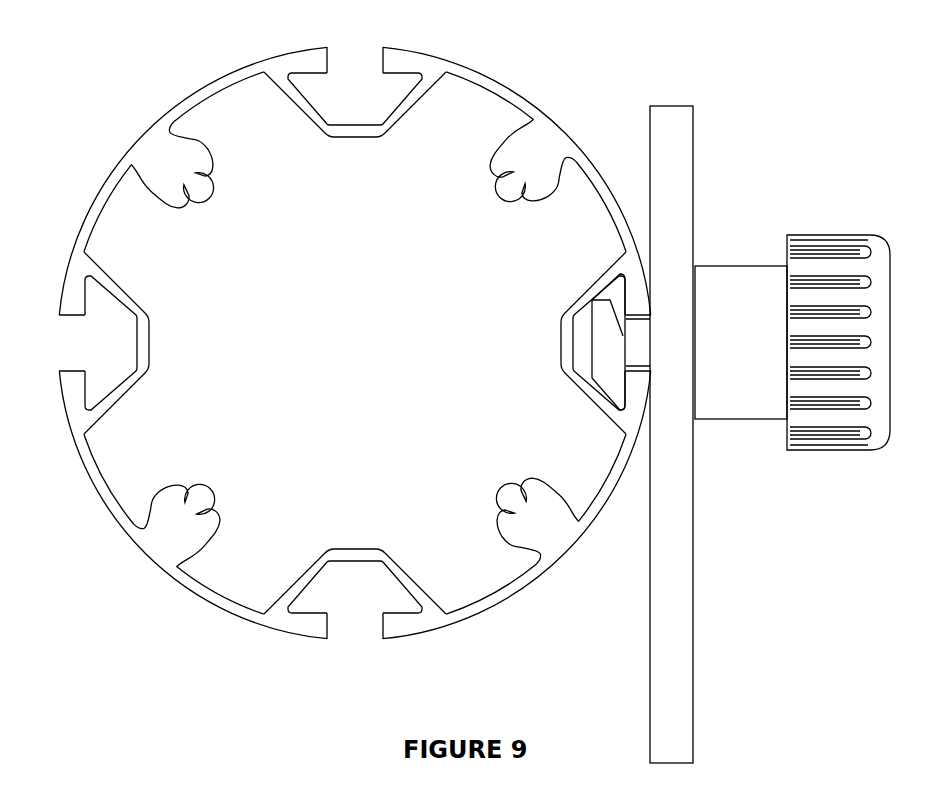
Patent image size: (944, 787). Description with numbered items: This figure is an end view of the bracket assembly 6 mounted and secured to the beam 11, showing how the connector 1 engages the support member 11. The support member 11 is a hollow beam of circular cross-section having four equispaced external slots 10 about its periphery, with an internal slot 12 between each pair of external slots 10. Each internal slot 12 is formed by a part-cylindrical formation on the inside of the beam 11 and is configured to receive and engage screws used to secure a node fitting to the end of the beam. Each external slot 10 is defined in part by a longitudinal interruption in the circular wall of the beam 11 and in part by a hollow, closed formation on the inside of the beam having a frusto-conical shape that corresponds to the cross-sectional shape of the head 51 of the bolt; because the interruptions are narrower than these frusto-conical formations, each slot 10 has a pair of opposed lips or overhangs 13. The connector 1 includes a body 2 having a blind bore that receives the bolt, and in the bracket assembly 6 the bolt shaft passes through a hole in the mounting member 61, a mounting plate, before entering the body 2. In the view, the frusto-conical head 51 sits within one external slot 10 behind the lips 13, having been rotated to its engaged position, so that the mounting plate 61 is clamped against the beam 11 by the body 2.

The connector 1 is at (788, 500).
The body 2 is at (777, 272).
The bracket assembly 6 is at (794, 133).
The slot 10 is at (369, 111).
The support member 11 is at (508, 87).
The internal slot 12 is at (525, 168).
The lips or overhangs 13 is at (400, 55).
The head 51 is at (603, 362).
The mounting member 61 is at (693, 162).